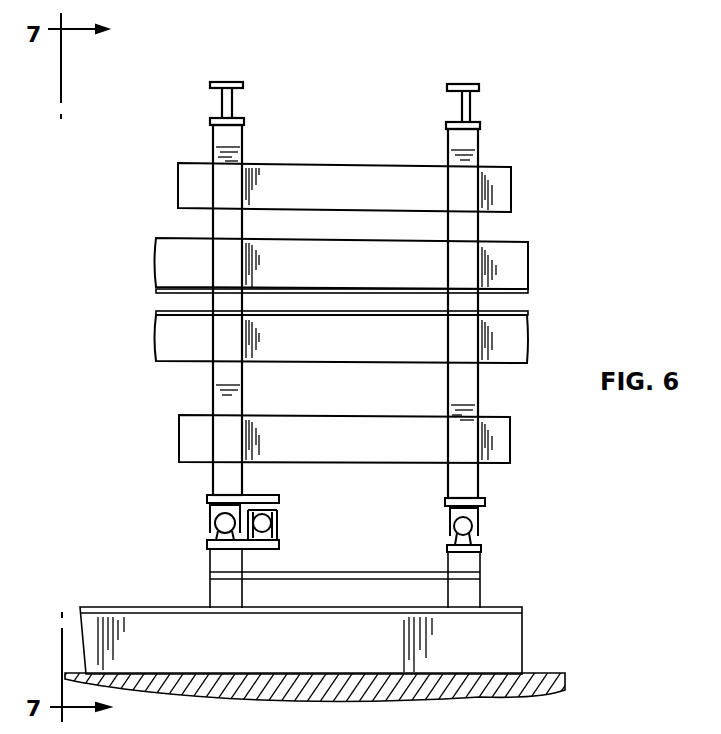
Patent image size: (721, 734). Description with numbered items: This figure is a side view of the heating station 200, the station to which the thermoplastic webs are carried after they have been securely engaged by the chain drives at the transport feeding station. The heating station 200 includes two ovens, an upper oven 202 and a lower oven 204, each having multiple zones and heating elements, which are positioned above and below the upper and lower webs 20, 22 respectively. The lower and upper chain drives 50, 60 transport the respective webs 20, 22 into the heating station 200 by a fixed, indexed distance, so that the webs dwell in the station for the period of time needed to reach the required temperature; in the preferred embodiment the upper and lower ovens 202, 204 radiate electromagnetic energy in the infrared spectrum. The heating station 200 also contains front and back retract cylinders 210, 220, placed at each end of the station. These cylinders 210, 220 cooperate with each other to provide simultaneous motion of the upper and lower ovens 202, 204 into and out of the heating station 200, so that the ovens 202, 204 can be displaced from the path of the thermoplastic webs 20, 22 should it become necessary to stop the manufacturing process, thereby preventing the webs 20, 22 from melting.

The heating station 200 is at (362, 93).
The upper oven 202 is at (498, 187).
The lower chain drive 50 is at (510, 263).
The upper web 20 is at (508, 294).
The lower web 22 is at (490, 310).
The upper chain drive 60 is at (512, 343).
The lower oven 204 is at (498, 447).
The front retract cylinder 210 is at (218, 526).
The back retract cylinder 220 is at (470, 522).